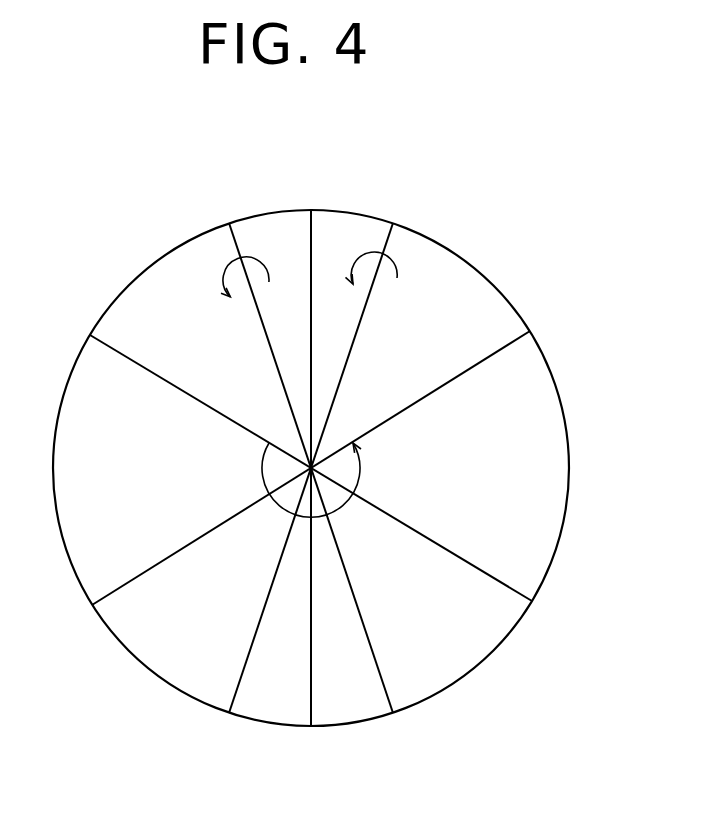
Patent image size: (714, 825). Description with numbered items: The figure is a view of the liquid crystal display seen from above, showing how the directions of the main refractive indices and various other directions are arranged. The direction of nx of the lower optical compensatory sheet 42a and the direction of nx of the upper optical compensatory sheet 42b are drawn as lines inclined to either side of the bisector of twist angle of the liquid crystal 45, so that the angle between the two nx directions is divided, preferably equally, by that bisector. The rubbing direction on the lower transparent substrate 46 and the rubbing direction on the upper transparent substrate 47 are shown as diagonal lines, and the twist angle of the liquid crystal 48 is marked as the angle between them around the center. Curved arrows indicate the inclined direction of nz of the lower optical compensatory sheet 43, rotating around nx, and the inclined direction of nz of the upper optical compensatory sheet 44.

The direction of nx of the lower optical compensatory sheet 42a is at (341, 450).
The direction of nx of the upper optical compensatory sheet 42b is at (287, 447).
The inclined direction of nz of the lower optical compensatory sheet 43 is at (398, 280).
The inclined direction of nz of the upper optical compensatory sheet 44 is at (217, 282).
The bisector of twist angle of the liquid crystal 45 is at (313, 446).
The rubbing direction on the lower transparent substrate 46 is at (339, 488).
The rubbing direction on the upper transparent substrate 47 is at (283, 490).
The twist angle of the liquid crystal 48 is at (339, 480).